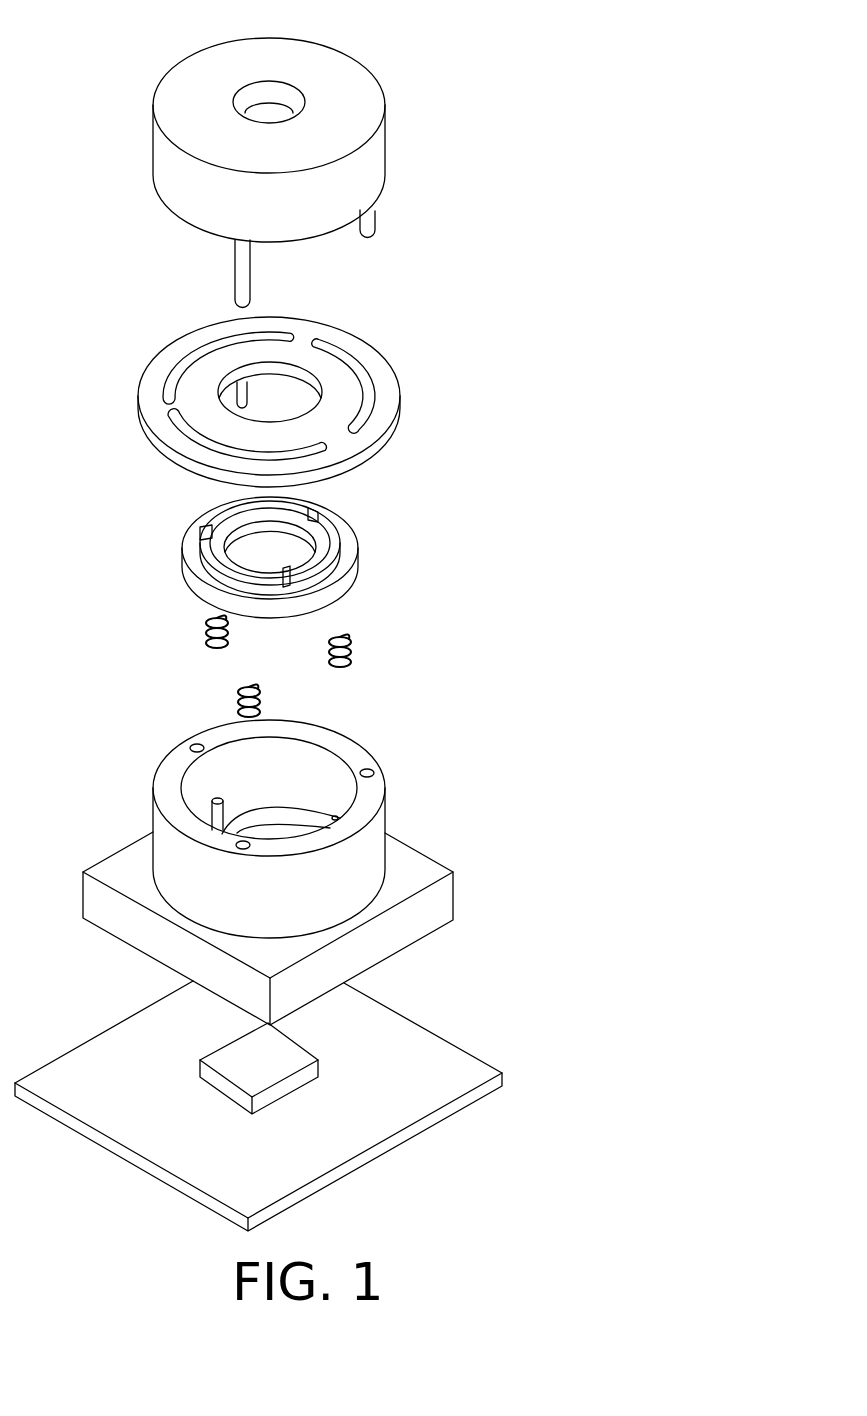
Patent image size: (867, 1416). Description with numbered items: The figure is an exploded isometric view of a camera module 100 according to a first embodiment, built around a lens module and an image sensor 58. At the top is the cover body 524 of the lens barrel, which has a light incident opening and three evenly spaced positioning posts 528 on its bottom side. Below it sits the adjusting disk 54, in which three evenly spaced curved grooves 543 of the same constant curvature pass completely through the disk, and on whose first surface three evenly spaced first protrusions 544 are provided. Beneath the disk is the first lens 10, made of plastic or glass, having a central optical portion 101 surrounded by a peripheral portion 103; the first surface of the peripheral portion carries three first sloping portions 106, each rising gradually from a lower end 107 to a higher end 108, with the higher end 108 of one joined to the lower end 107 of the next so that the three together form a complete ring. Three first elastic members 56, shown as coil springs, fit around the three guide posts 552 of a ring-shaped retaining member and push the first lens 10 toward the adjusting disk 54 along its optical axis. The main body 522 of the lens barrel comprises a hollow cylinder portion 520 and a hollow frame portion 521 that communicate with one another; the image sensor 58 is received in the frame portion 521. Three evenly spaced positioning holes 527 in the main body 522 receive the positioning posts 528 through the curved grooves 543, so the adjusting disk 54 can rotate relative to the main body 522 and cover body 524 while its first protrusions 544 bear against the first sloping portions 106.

The camera module 100 is at (412, 38).
The cover body 524 is at (368, 163).
The positioning posts 528 is at (373, 227).
The adjusting disk 54 is at (272, 402).
The first protrusions 544 is at (240, 393).
The curved grooves 543 is at (373, 398).
The first lens 10 is at (301, 573).
The central optical portion 101 is at (290, 542).
The peripheral portion 103 is at (342, 558).
The first sloping portions 106 is at (207, 564).
The lower end 107 is at (277, 581).
The higher end 108 is at (210, 533).
The first elastic members 56 is at (347, 643).
The guide posts 552 is at (213, 800).
The positioning holes 527 is at (378, 768).
The cylinder portion 520 is at (307, 829).
The frame portion 521 is at (442, 908).
The main body 522 is at (344, 872).
The image sensor 58 is at (287, 1060).